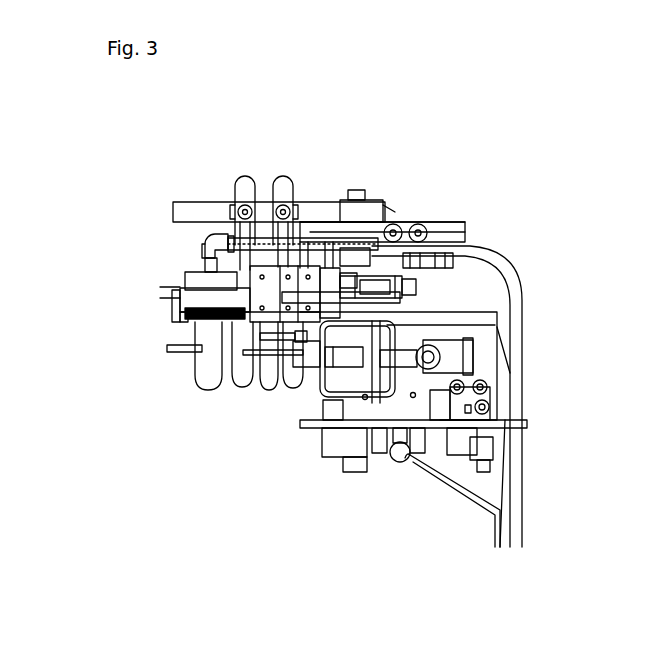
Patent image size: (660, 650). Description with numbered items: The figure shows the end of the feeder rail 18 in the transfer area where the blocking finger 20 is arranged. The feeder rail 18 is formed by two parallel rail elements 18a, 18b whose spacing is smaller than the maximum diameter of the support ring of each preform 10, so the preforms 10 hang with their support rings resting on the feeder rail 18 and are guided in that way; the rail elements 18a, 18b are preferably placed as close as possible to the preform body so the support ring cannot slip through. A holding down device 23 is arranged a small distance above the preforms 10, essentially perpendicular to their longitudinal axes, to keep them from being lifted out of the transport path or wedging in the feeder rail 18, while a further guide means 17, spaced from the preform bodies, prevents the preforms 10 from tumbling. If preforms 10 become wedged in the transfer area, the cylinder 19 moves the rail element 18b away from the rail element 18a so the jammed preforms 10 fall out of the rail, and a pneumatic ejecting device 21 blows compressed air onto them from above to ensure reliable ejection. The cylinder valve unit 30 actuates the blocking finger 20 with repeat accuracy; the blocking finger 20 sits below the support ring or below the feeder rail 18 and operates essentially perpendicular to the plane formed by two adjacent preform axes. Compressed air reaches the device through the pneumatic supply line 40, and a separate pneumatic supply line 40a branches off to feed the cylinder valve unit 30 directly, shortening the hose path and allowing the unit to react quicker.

The preform 10 is at (186, 370).
The guide means 17 is at (167, 346).
The feeder rail 18 is at (172, 303).
The rail element 18a is at (172, 318).
The rail element 18b is at (255, 315).
The cylinder 19 is at (368, 297).
The blocking finger 20 is at (285, 338).
The pneumatic ejecting device 21 is at (172, 250).
The holding down device 23 is at (220, 305).
The cylinder valve unit 30 is at (390, 475).
The pneumatic supply line 40 is at (508, 492).
The pneumatic supply line 40a is at (443, 475).